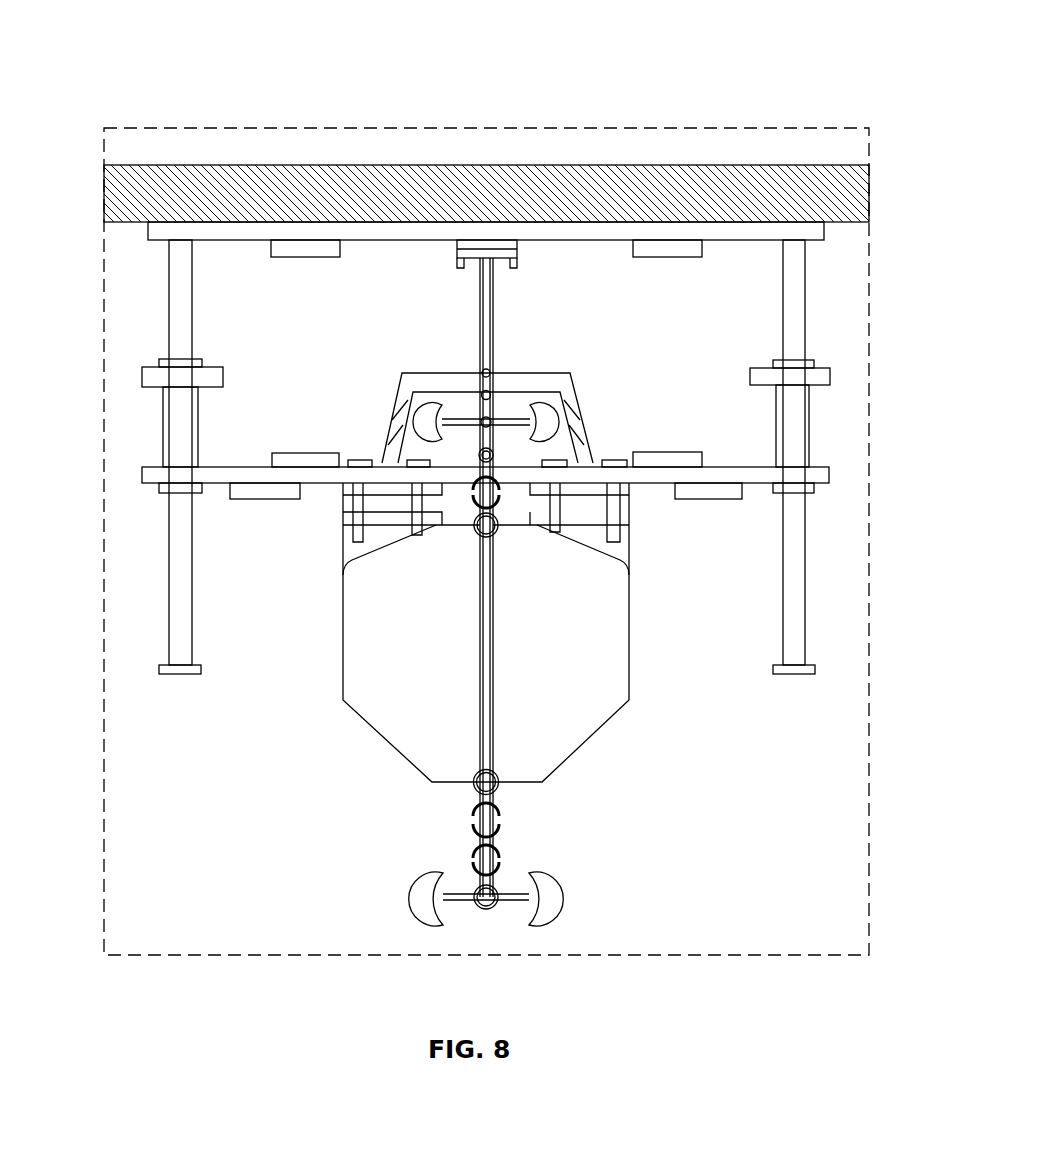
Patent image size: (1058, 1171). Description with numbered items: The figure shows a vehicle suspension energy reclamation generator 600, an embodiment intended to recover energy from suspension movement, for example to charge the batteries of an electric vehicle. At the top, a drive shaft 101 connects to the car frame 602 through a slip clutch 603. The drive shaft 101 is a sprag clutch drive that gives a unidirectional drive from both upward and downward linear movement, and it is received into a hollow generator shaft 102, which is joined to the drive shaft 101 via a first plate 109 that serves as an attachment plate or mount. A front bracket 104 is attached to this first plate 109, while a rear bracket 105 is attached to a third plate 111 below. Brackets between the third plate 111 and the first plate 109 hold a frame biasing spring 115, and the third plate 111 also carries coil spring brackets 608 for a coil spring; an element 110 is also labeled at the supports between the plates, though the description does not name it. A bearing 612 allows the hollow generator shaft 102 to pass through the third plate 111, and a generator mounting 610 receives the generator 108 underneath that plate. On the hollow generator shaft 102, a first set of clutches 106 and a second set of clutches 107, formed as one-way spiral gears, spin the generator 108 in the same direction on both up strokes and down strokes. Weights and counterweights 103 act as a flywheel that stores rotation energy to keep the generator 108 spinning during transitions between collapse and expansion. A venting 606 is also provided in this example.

The vehicle suspension energy reclamation generator 600 is at (128, 43).
The car frame 602 is at (710, 190).
The slip clutch 603 is at (492, 240).
The frame biasing spring 115 is at (305, 250).
The first plate 109 is at (773, 270).
The nuts 110 is at (830, 372).
The venting 606 is at (492, 452).
The third plate 111 is at (743, 467).
The coil spring brackets 608 is at (742, 490).
The generator mounting 610 is at (383, 517).
The first set of clutches 106 is at (627, 487).
The generator 108 is at (568, 625).
The drive shaft 101 is at (478, 305).
The hollow generator shaft 102 is at (495, 407).
The weights and counterweights 103 is at (433, 408).
The front bracket 104 is at (540, 420).
The bearing 612 is at (480, 527).
The second set of clutches 107 is at (473, 812).
The rear bracket 105 is at (473, 855).